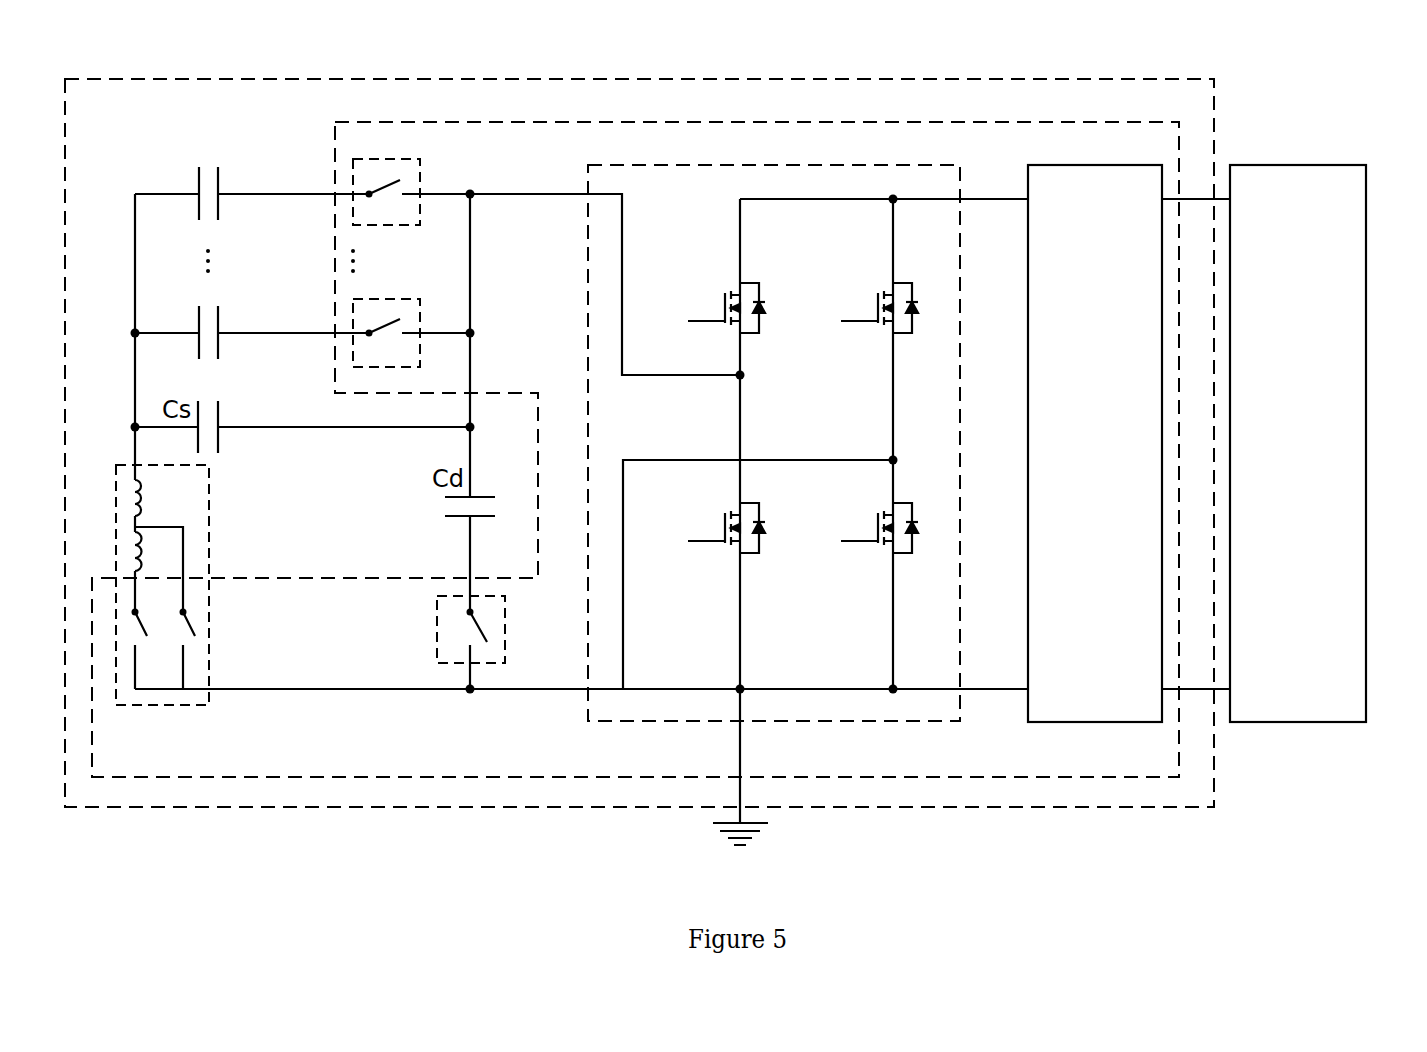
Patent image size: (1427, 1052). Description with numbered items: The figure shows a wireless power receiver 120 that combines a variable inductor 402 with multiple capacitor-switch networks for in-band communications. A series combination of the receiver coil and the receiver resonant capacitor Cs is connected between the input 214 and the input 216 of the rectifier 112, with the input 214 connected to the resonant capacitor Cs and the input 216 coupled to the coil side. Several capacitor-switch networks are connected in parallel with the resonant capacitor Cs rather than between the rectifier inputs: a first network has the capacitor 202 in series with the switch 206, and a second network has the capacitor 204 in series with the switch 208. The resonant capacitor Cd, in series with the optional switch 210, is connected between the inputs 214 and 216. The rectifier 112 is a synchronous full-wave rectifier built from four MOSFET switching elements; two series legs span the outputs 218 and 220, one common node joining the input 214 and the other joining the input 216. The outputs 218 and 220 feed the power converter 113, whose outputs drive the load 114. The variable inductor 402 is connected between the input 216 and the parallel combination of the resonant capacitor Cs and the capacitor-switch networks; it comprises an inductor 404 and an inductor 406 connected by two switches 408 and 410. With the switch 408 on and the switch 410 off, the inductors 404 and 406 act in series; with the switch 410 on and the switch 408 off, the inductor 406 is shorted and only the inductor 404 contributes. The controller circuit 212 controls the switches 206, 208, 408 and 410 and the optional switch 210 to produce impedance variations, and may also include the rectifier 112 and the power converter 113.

The receiver 120 is at (1214, 145).
The controller circuit 212 is at (788, 122).
The rectifier 112 is at (799, 721).
The power converter 113 is at (1048, 722).
The load 114 is at (1300, 722).
The capacitor 202 is at (219, 193).
The capacitor 204 is at (219, 332).
The switch 206 is at (420, 177).
The switch 208 is at (420, 317).
The optional switch 210 is at (457, 596).
The input 214 is at (693, 377).
The input 216 is at (773, 460).
The output 218 is at (913, 197).
The output 220 is at (913, 689).
The variable inductor 402 is at (218, 600).
The inductor 404 is at (138, 517).
The inductor 406 is at (138, 572).
The switch 408 is at (148, 633).
The switch 410 is at (192, 625).